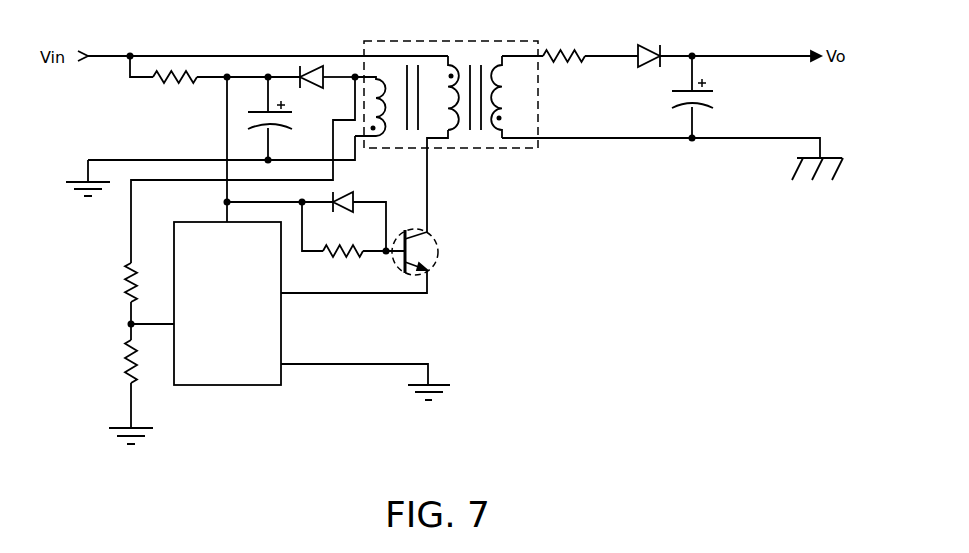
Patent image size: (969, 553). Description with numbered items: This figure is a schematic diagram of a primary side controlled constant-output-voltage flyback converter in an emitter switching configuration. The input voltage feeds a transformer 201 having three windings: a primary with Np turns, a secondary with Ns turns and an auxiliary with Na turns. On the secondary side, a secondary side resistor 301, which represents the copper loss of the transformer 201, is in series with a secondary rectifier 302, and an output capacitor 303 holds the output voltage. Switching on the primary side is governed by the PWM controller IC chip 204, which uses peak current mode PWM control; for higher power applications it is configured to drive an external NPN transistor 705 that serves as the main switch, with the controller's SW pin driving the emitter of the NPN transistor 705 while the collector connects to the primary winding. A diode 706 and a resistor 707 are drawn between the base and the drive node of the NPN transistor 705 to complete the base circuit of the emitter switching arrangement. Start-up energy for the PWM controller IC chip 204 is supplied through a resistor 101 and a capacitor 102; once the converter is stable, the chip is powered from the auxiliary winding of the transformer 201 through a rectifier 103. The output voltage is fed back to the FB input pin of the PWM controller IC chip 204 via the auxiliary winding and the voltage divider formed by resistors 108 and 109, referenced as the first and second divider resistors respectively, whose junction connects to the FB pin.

The resistor 101 is at (177, 86).
The capacitor 102 is at (292, 127).
The rectifier 103 is at (316, 87).
The voltage divider resistor 108 is at (127, 297).
The voltage divider resistor 109 is at (127, 378).
The transformer 201 is at (459, 40).
The PWM controller IC chip 204 is at (211, 314).
The secondary side resistor 301 is at (568, 48).
The secondary rectifier 302 is at (650, 45).
The output capacitor 303 is at (715, 107).
The NPN transistor 705 is at (432, 272).
The diode 706 is at (343, 209).
The resistor 707 is at (343, 258).